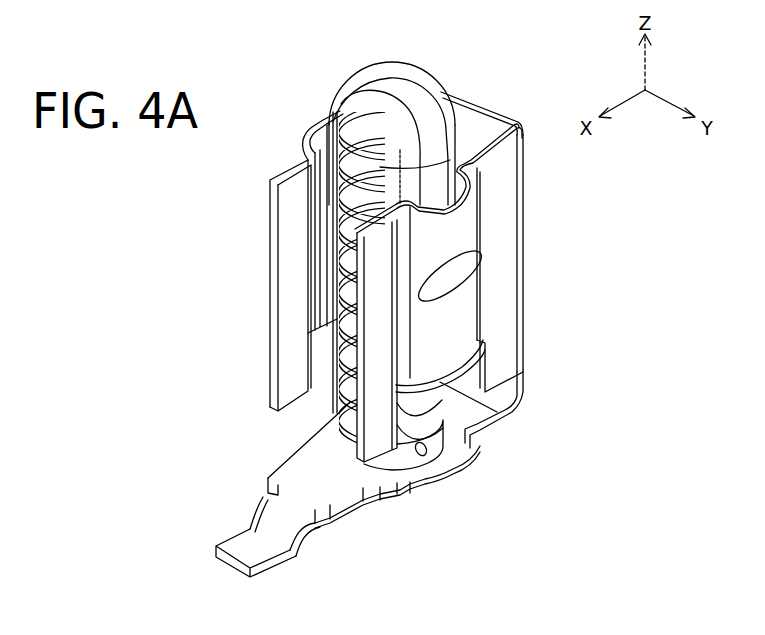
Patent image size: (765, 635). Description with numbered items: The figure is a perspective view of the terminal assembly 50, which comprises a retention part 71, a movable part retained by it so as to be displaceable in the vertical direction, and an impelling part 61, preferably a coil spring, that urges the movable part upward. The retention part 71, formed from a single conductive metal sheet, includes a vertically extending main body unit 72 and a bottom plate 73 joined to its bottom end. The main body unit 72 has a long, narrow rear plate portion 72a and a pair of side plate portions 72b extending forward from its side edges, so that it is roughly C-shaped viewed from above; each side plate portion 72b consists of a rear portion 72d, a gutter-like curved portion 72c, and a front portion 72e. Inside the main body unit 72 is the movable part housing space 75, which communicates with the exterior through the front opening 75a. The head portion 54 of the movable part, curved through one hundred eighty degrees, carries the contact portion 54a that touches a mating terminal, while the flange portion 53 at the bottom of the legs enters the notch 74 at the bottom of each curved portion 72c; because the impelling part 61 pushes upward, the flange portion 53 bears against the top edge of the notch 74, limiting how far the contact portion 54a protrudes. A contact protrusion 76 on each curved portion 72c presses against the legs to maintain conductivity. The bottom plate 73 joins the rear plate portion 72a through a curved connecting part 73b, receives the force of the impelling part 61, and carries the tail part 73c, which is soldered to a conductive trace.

The terminal assembly 50 is at (537, 226).
The flange portion 53 is at (490, 402).
The head portion 54 is at (350, 78).
The contact portion 54a is at (378, 63).
The impelling part 61 is at (432, 413).
The retention part 71 is at (525, 324).
The main body unit 72 is at (527, 161).
The rear plate portion 72a is at (480, 92).
The side plate portion 72b is at (505, 195).
The curved portion 72c is at (457, 317).
The rear portion 72d is at (502, 357).
The front portion 72e is at (290, 218).
The bottom plate 73 is at (380, 493).
The connecting part 73b is at (513, 404).
The tail part 73c is at (277, 567).
The notch 74 is at (322, 362).
The movable part housing space 75 is at (487, 130).
The front opening 75a is at (277, 288).
The contact protrusion 76 is at (463, 277).